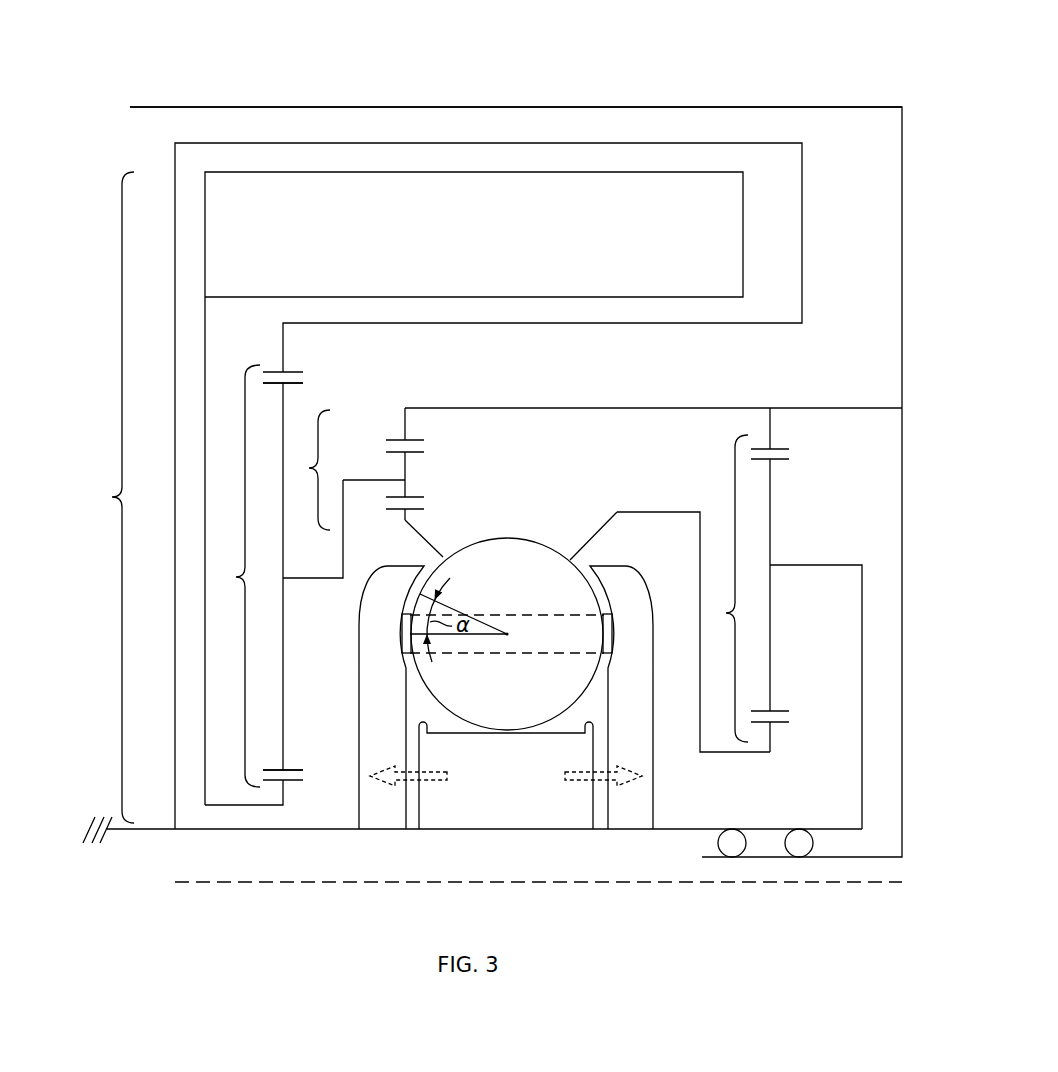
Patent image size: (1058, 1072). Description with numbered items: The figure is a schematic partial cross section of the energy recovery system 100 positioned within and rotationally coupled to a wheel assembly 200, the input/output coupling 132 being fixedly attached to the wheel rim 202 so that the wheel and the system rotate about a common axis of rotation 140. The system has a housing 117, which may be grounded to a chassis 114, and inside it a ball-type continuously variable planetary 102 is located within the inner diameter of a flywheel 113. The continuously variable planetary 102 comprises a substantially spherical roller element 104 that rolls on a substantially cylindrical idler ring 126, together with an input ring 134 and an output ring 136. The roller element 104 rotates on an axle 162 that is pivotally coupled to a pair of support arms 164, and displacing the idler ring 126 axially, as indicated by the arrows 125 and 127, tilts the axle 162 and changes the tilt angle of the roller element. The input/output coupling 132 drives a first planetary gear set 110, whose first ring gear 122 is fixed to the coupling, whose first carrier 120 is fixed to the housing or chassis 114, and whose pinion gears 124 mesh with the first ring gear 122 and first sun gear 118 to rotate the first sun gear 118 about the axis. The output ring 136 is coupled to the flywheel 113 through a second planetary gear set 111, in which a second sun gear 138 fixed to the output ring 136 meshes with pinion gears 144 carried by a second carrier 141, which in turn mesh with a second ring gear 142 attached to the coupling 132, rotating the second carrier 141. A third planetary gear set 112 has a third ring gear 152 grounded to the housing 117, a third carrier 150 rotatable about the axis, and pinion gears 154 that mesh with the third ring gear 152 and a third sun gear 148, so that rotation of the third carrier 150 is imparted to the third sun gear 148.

The energy recovery system 100 is at (98, 497).
The ball-type continuously variable planetary 102 is at (600, 552).
The roller element 104 is at (604, 604).
The first planetary gear set 110 is at (726, 613).
The second planetary gear set 111 is at (305, 470).
The third planetary gear set 112 is at (236, 577).
The flywheel 113 is at (743, 235).
The chassis 114 is at (93, 820).
The housing 117 is at (175, 152).
The first sun gear 118 is at (778, 724).
The first carrier 120 is at (773, 636).
The first ring gear 122 is at (773, 424).
The pinion gears 124 is at (773, 480).
The arrow 125 is at (567, 782).
The idler ring 126 is at (419, 815).
The arrow 127 is at (447, 772).
The input/output coupling 132 is at (864, 408).
The input ring 134 is at (583, 542).
The output ring 136 is at (428, 541).
The second sun gear 138 is at (394, 510).
The axis of rotation 140 is at (722, 884).
The second carrier 141 is at (383, 480).
The second ring gear 142 is at (408, 420).
The pinion gears 144 is at (408, 462).
The third sun gear 148 is at (289, 783).
The third carrier 150 is at (318, 580).
The third ring gear 152 is at (293, 370).
The pinion gears 154 is at (285, 401).
The axle 162 is at (537, 613).
The support arms 164 is at (360, 695).
The wheel assembly 200 is at (767, 75).
The wheel rim 202 is at (362, 107).